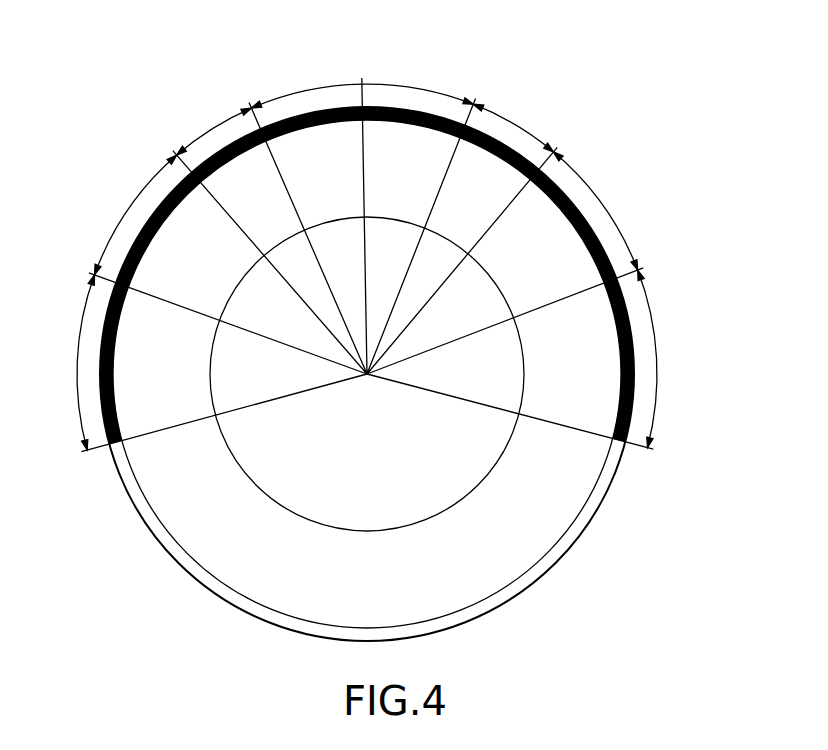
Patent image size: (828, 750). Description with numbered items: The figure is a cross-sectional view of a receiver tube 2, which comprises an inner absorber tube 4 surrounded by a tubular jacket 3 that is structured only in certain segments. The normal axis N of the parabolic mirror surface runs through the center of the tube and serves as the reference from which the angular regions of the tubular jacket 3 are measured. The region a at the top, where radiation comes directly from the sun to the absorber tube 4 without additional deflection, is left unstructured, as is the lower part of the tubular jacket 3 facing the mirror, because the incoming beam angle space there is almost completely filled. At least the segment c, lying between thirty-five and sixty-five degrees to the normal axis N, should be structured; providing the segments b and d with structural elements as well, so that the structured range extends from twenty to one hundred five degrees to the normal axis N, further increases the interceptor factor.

The receiver tube 2 is at (168, 583).
The tubular jacket 3 is at (583, 523).
The absorber tube 4 is at (460, 502).
The normal axis N is at (363, 158).
The region a is at (362, 77).
The segment b is at (365, 127).
The segment c is at (366, 213).
The segment d is at (370, 360).